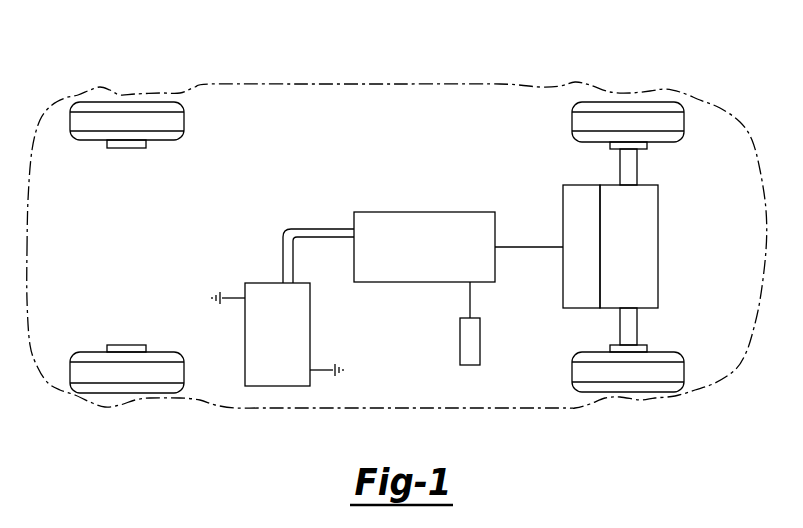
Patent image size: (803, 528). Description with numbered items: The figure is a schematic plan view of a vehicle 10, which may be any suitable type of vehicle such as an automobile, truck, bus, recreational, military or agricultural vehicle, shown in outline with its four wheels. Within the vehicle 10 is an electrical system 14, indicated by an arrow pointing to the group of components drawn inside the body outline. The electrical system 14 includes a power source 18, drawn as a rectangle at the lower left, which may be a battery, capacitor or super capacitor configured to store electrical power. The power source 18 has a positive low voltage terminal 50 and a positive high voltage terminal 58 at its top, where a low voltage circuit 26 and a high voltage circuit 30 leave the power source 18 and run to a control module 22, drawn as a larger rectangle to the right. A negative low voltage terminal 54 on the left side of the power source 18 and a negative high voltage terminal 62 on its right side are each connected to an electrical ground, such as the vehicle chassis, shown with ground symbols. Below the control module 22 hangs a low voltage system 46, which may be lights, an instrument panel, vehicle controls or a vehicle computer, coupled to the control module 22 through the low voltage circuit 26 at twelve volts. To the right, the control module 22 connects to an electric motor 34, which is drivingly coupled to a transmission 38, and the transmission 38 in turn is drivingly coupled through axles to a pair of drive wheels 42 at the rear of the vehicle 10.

The vehicle 10 is at (255, 60).
The electrical system 14 is at (382, 180).
The power source 18 is at (245, 367).
The control module 22 is at (415, 272).
The low voltage circuit 26 is at (308, 228).
The high voltage circuit 30 is at (330, 238).
The electric motor 34 is at (575, 200).
The transmission 38 is at (650, 248).
The drive wheels 42 is at (627, 122).
The low voltage system 46 is at (474, 345).
The positive low voltage terminal 50 is at (283, 283).
The negative low voltage terminal 54 is at (245, 298).
The positive high voltage terminal 58 is at (293, 288).
The negative high voltage terminal 62 is at (310, 370).